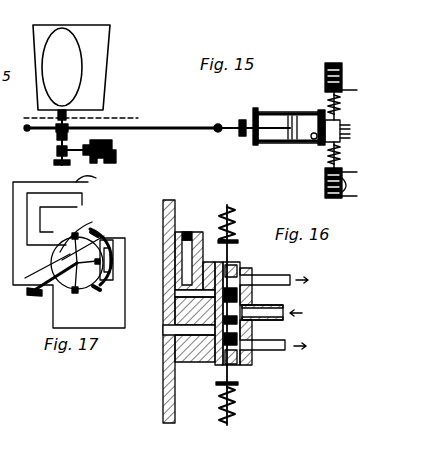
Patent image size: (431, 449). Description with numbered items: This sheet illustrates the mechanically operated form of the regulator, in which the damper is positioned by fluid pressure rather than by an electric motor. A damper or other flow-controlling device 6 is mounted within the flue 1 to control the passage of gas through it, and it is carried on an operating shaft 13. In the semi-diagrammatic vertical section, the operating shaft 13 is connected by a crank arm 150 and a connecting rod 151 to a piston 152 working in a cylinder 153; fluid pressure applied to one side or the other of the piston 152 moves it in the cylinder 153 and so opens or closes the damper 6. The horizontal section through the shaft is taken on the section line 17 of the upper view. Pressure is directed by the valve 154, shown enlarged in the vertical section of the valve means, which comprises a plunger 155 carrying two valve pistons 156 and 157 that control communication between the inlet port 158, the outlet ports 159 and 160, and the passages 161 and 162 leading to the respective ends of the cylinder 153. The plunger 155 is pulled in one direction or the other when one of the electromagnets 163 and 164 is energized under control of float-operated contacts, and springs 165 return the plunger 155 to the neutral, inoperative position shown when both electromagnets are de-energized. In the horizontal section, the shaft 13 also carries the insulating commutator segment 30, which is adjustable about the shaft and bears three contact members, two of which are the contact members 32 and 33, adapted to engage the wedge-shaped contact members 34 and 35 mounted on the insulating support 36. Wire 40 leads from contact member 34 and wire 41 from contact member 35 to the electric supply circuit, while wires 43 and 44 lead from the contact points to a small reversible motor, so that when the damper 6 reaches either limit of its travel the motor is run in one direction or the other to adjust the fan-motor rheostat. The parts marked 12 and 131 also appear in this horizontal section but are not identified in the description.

In FIG. 15, the flue 1 is at (106, 38).
In FIG. 15, the damper 6 is at (82, 72).
In FIG. 17, the inner frame 12 is at (69, 215).
In FIG. 15, the operating shaft 13 is at (62, 123).
In FIG. 17, the operating shaft 13 is at (60, 250).
In FIG. 15, the section line 17 is at (82, 118).
In FIG. 17, the insulating commutator segment 30 is at (77, 263).
In FIG. 17, the contact member 32 is at (113, 256).
In FIG. 17, the contact member 33 is at (72, 292).
In FIG. 17, the contact member 34 is at (98, 233).
In FIG. 17, the contact member 35 is at (90, 286).
In FIG. 17, the insulating support 36 is at (102, 284).
In FIG. 17, the wire 40 is at (125, 313).
In FIG. 17, the wire 41 is at (96, 304).
In FIG. 17, the wire 43 is at (86, 181).
In FIG. 17, the wire 44 is at (100, 180).
In FIG. 17, the pivot pin 131 is at (75, 232).
In FIG. 15, the crank arm 150 is at (52, 133).
In FIG. 17, the crank arm 150 is at (42, 279).
In FIG. 15, the connecting rod 151 is at (152, 133).
In FIG. 17, the connecting rod 151 is at (33, 297).
In FIG. 15, the piston 152 is at (290, 145).
In FIG. 15, the cylinder 153 is at (317, 146).
In FIG. 15, the valve 154 is at (342, 121).
In FIG. 16, the valve 154 is at (262, 300).
In FIG. 16, the plunger 155 is at (258, 334).
In FIG. 16, the valve piston 156 is at (256, 336).
In FIG. 16, the valve piston 157 is at (246, 290).
In FIG. 15, the inlet port 158 is at (393, 134).
In FIG. 16, the inlet port 158 is at (284, 312).
In FIG. 15, the outlet port 159 is at (350, 137).
In FIG. 16, the outlet port 159 is at (287, 352).
In FIG. 15, the outlet port 160 is at (352, 126).
In FIG. 16, the outlet port 160 is at (292, 276).
In FIG. 15, the passage 161 is at (309, 146).
In FIG. 16, the passage 161 is at (192, 332).
In FIG. 15, the passage 162 is at (283, 111).
In FIG. 16, the passage 162 is at (199, 248).
In FIG. 15, the electromagnet 163 is at (342, 199).
In FIG. 15, the electromagnet 164 is at (343, 68).
In FIG. 15, the springs 165 is at (329, 103).
In FIG. 16, the springs 165 is at (236, 228).